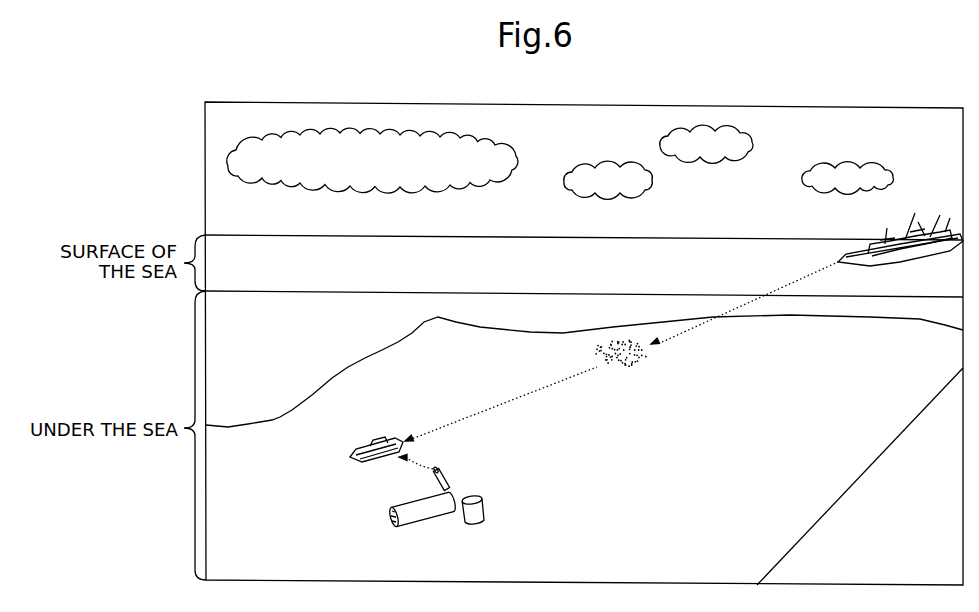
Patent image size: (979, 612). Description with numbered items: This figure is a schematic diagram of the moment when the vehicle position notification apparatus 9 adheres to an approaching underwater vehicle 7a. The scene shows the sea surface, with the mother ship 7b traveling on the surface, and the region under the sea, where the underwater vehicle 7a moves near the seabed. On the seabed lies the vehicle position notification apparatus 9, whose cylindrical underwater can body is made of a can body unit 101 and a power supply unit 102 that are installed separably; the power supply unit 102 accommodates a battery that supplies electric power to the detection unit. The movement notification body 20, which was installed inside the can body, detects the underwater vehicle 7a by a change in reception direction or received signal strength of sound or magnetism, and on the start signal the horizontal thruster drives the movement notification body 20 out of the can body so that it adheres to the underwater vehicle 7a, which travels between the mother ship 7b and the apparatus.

The mother ship 7b is at (917, 215).
The underwater vehicle 7a is at (386, 432).
The movement notification body 20 is at (380, 466).
The can body unit 101 is at (433, 524).
The power supply unit 102 is at (485, 513).
The vehicle position notification apparatus 9 is at (513, 496).